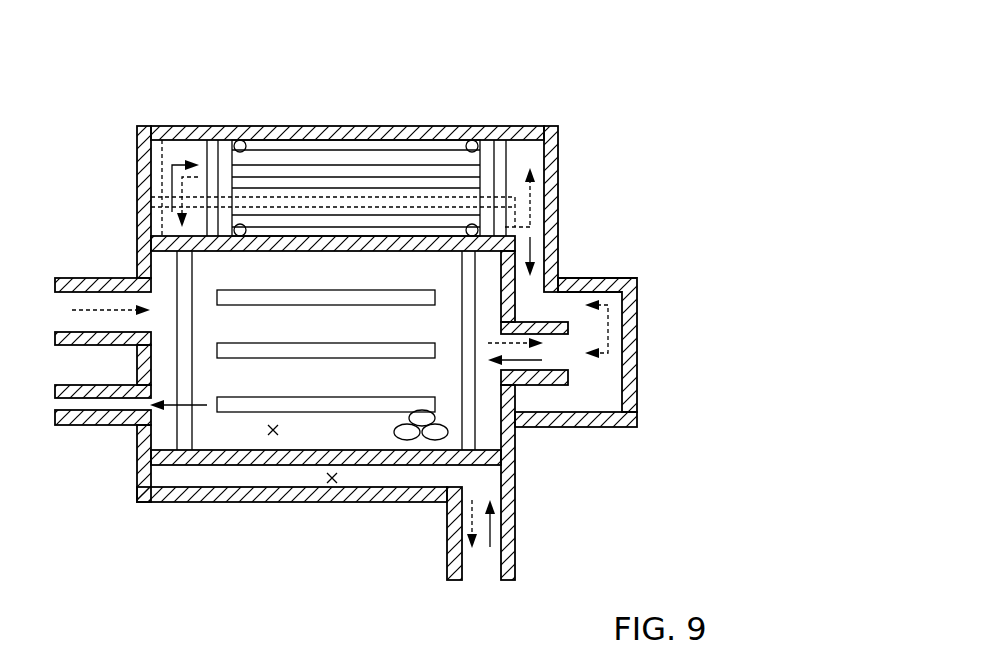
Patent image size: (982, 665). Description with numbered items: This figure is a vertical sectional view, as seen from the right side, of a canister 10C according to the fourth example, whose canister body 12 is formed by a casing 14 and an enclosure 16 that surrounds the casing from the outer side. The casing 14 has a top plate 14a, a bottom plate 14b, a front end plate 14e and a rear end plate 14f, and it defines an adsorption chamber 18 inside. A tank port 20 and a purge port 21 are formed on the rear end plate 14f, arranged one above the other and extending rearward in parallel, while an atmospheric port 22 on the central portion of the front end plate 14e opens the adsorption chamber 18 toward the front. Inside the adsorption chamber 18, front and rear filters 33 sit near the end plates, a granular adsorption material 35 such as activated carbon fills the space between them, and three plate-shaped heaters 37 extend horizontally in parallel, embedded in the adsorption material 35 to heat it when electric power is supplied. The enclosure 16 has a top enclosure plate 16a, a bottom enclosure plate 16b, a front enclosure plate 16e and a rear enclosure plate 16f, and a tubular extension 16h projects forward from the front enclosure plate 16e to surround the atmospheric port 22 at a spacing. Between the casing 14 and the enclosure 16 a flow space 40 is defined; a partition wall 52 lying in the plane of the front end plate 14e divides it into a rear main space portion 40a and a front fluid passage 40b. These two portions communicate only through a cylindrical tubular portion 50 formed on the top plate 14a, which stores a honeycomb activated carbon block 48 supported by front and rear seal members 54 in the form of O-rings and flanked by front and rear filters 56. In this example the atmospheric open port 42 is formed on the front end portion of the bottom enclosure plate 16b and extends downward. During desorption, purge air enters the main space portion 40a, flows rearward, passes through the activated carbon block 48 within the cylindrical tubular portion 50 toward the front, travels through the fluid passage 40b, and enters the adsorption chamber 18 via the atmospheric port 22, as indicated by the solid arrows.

The canister 10C is at (582, 74).
The canister body 12 is at (525, 110).
The casing 14 is at (128, 245).
The top plate 14a is at (297, 236).
The bottom plate 14b is at (232, 458).
The front end plate 14e is at (512, 432).
The rear end plate 14f is at (142, 440).
The enclosure 16 is at (311, 512).
The top enclosure plate 16a is at (160, 140).
The bottom enclosure plate 16b is at (365, 500).
The front enclosure plate 16e is at (552, 152).
The rear enclosure plate 16f is at (140, 160).
The tubular extension 16h is at (608, 427).
The adsorption chamber 18 is at (275, 440).
The tank port 20 is at (78, 278).
The purge port 21 is at (85, 418).
The atmospheric port 22 is at (588, 278).
The filters 33 is at (185, 455).
The adsorption material 35 is at (408, 438).
The heaters 37 is at (380, 290).
The flow space 40 is at (331, 482).
The main space portion 40a is at (263, 475).
The fluid passage 40b is at (603, 390).
The atmospheric open port 42 is at (508, 556).
The activated carbon block 48 is at (356, 160).
The cylindrical tubular portion 50 is at (276, 150).
The partition wall 52 is at (535, 218).
The seal members 54 is at (240, 140).
The filters 56 is at (210, 140).